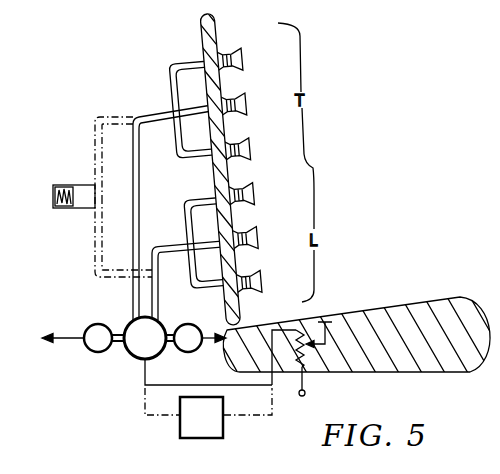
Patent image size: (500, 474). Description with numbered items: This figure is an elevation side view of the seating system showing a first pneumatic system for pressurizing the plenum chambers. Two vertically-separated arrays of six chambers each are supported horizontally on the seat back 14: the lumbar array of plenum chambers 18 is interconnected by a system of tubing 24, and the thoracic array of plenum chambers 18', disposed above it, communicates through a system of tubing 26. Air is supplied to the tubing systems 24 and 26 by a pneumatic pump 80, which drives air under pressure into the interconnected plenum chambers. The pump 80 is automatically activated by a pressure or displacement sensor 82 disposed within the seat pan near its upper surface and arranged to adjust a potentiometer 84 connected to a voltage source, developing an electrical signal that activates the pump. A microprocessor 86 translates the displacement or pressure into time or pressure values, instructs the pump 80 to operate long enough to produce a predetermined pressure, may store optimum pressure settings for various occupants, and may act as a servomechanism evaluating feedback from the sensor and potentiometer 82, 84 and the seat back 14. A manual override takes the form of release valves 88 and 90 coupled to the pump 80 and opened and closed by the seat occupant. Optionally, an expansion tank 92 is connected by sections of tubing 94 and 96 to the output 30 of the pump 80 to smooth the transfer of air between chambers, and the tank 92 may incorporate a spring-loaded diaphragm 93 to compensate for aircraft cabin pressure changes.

The seat back 14 is at (203, 20).
The plenum chambers 18 is at (258, 239).
The plenum chambers 18' is at (248, 105).
The system of tubing 24 is at (190, 206).
The system of tubing 26 is at (177, 72).
The output of pump 30 is at (168, 247).
The pneumatic pump 80 is at (164, 322).
The pressure or displacement sensor 82 is at (346, 330).
The potentiometer 84 is at (306, 364).
The microprocessor 86 is at (180, 430).
The release valve 88 is at (90, 352).
The release valve 90 is at (182, 352).
The expansion tank 92 is at (83, 185).
The spring-loaded diaphragm 93 is at (62, 187).
The section of tubing 94 is at (96, 142).
The section of tubing 96 is at (96, 248).